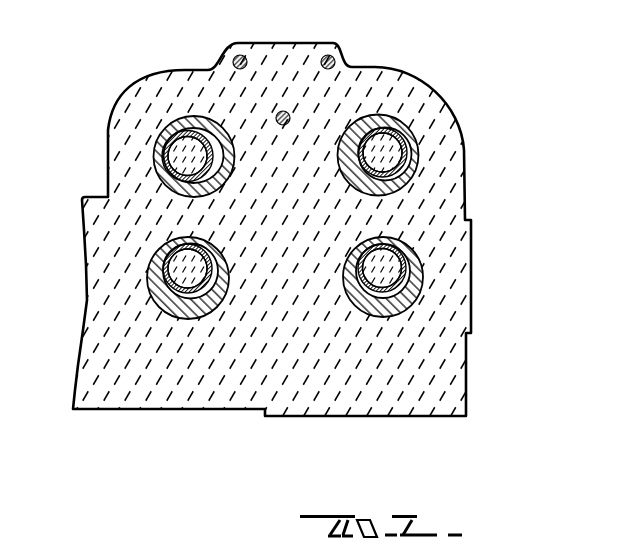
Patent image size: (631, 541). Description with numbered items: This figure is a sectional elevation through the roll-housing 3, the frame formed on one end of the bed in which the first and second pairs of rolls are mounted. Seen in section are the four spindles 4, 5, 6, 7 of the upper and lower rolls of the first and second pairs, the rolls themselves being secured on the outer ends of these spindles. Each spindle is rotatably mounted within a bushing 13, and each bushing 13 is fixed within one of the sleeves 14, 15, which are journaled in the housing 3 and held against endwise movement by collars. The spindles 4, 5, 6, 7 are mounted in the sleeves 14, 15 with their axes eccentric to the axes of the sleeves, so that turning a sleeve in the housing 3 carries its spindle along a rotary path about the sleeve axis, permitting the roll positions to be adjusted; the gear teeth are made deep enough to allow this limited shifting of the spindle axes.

The roll-housing 3 is at (455, 199).
The spindle 4 is at (393, 154).
The spindle 5 is at (397, 272).
The spindle 6 is at (172, 149).
The spindle 7 is at (180, 278).
The bushing 13 is at (160, 140).
The sleeve 14 is at (178, 120).
The sleeve 15 is at (157, 303).